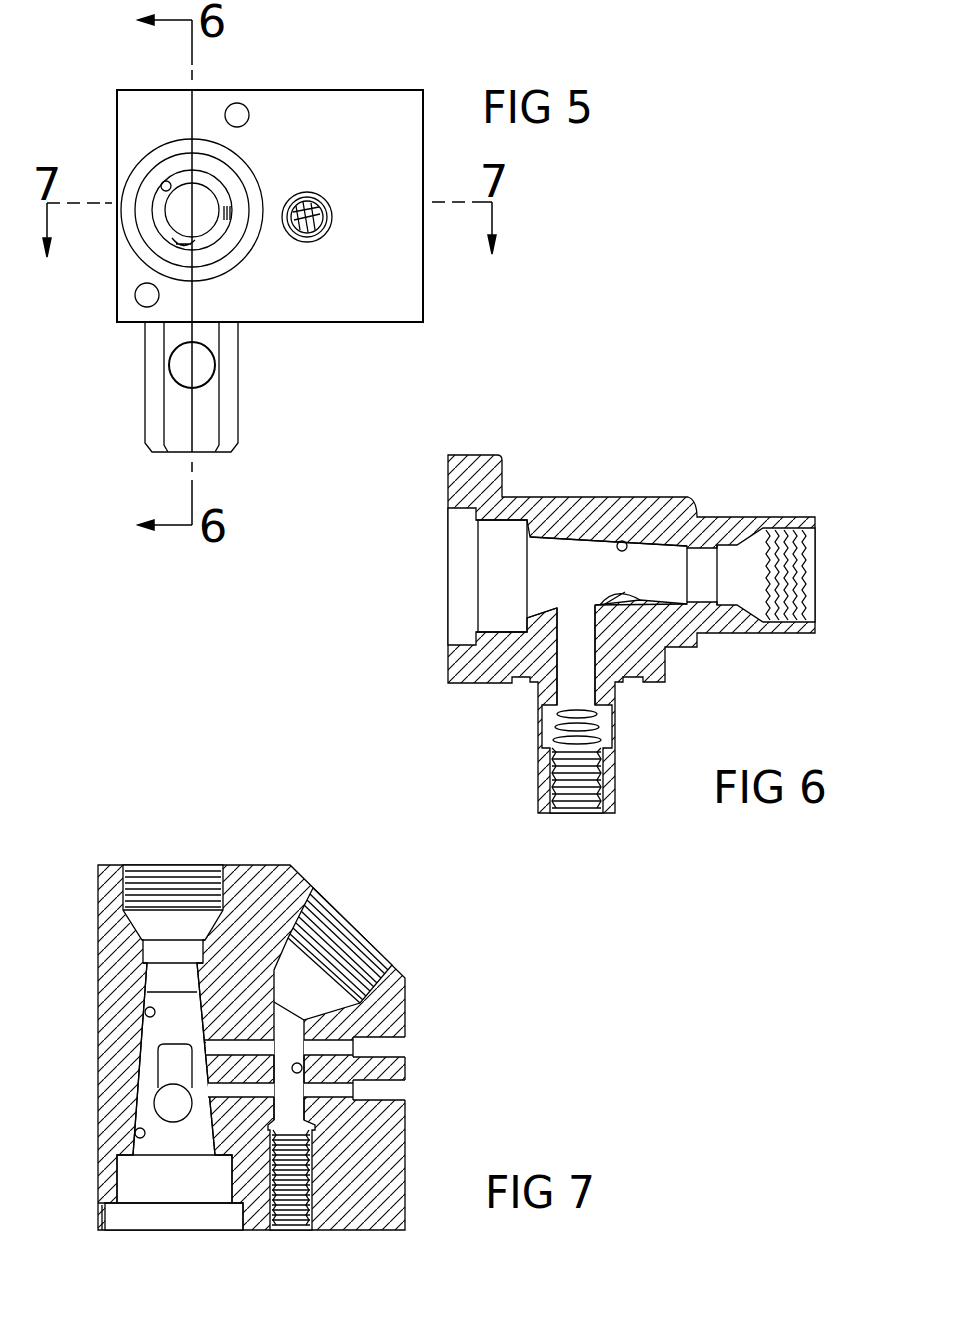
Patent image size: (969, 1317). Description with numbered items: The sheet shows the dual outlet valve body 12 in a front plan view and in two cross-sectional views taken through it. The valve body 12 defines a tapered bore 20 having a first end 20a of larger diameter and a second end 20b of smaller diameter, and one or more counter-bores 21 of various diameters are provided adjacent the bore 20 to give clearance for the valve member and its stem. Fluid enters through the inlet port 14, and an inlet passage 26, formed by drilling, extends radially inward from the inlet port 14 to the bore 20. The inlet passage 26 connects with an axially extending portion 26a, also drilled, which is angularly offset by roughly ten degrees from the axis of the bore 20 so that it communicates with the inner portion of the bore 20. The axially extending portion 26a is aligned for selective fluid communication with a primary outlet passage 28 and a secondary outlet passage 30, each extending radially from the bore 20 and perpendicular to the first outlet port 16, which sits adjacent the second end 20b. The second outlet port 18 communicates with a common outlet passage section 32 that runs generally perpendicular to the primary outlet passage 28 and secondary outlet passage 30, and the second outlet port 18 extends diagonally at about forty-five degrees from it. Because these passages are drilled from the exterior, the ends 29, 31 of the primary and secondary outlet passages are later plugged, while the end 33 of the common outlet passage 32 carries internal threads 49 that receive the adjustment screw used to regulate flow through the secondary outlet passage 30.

In FIG. 5, the valve body 12 is at (345, 105).
In FIG. 6, the valve body 12 is at (520, 668).
In FIG. 7, the valve body 12 is at (120, 987).
In FIG. 5, the inlet port 14 is at (192, 436).
In FIG. 6, the inlet port 14 is at (580, 790).
In FIG. 6, the first outlet port 16 is at (797, 576).
In FIG. 7, the first outlet port 16 is at (148, 895).
In FIG. 7, the second outlet port 18 is at (345, 927).
In FIG. 5, the bore 20 is at (161, 186).
In FIG. 6, the bore 20 is at (622, 541).
In FIG. 7, the bore 20 is at (216, 1120).
In FIG. 6, the first end 20a is at (537, 520).
In FIG. 7, the first end 20a is at (136, 1137).
In FIG. 6, the second end 20b is at (684, 506).
In FIG. 7, the second end 20b is at (145, 1012).
In FIG. 6, the counter-bore 21 is at (462, 512).
In FIG. 7, the counter-bore 21 is at (104, 1217).
In FIG. 6, the inlet passage 26 is at (597, 712).
In FIG. 7, the inlet passage 26 is at (155, 1102).
In FIG. 5, the axially extending portion 26a is at (177, 240).
In FIG. 6, the axially extending portion 26a is at (625, 590).
In FIG. 7, the axially extending portion 26a is at (163, 1070).
In FIG. 5, the primary outlet passage 28 is at (218, 250).
In FIG. 7, the primary outlet passage 28 is at (247, 1047).
In FIG. 7, the end of primary outlet passage 29 is at (393, 1050).
In FIG. 5, the secondary outlet passage 30 is at (228, 218).
In FIG. 7, the secondary outlet passage 30 is at (257, 1090).
In FIG. 7, the end of secondary outlet passage 31 is at (398, 1088).
In FIG. 7, the common outlet passage section 32 is at (302, 1068).
In FIG. 5, the end of common outlet passage 33 is at (330, 212).
In FIG. 7, the internal threads 49 is at (288, 1228).